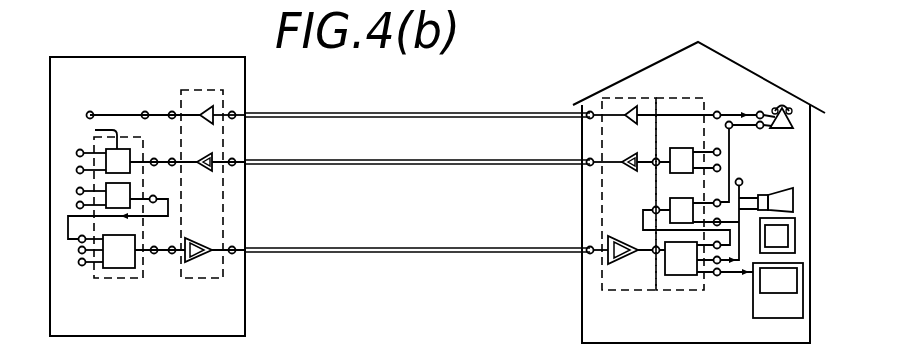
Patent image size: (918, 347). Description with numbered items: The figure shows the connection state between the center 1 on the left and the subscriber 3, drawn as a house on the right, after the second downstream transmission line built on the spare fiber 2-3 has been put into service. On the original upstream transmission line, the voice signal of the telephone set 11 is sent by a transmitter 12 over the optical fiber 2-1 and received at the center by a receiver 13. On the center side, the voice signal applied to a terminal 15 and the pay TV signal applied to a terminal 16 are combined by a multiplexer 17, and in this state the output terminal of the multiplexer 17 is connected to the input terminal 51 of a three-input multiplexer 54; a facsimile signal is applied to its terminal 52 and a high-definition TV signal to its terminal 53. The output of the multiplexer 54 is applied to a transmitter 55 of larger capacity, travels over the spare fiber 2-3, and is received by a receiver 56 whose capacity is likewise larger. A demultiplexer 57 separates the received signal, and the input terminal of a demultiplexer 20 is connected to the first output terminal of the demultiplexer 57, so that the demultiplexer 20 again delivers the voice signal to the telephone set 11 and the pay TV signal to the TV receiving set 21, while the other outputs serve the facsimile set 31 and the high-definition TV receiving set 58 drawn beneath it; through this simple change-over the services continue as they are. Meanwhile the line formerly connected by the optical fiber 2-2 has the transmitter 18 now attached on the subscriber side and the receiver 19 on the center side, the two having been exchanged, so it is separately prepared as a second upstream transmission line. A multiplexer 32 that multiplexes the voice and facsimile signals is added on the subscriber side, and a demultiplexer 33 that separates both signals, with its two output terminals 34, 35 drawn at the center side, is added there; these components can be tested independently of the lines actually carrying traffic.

The center 1 is at (160, 57).
The subscriber 3 is at (760, 77).
The telephone set 11 is at (783, 129).
The transmitter 12 is at (632, 104).
The receiver 13 is at (207, 106).
The terminal 15 is at (76, 191).
The terminal 16 is at (76, 205).
The multiplexer 17 is at (140, 188).
The transmitter 18 is at (630, 151).
The receiver 19 is at (203, 152).
The demultiplexer 20 is at (670, 199).
The TV receiving set 21 is at (795, 233).
The optical fiber 2-1 is at (403, 112).
The optical fiber 2-2 is at (403, 160).
The spare fiber 2-3 is at (406, 246).
The facsimile set 31 is at (768, 192).
The multiplexer 32 is at (682, 147).
The demultiplexer 33 is at (95, 130).
The input terminal 34 is at (76, 153).
The input terminal 35 is at (76, 170).
The terminal 51 is at (68, 239).
The terminal 52 is at (78, 250).
The terminal 53 is at (78, 262).
The multiplexer 54 is at (117, 278).
The transmitter 55 is at (205, 278).
The receiver 56 is at (622, 265).
The demultiplexer 57 is at (673, 276).
The display unit 58 is at (753, 307).